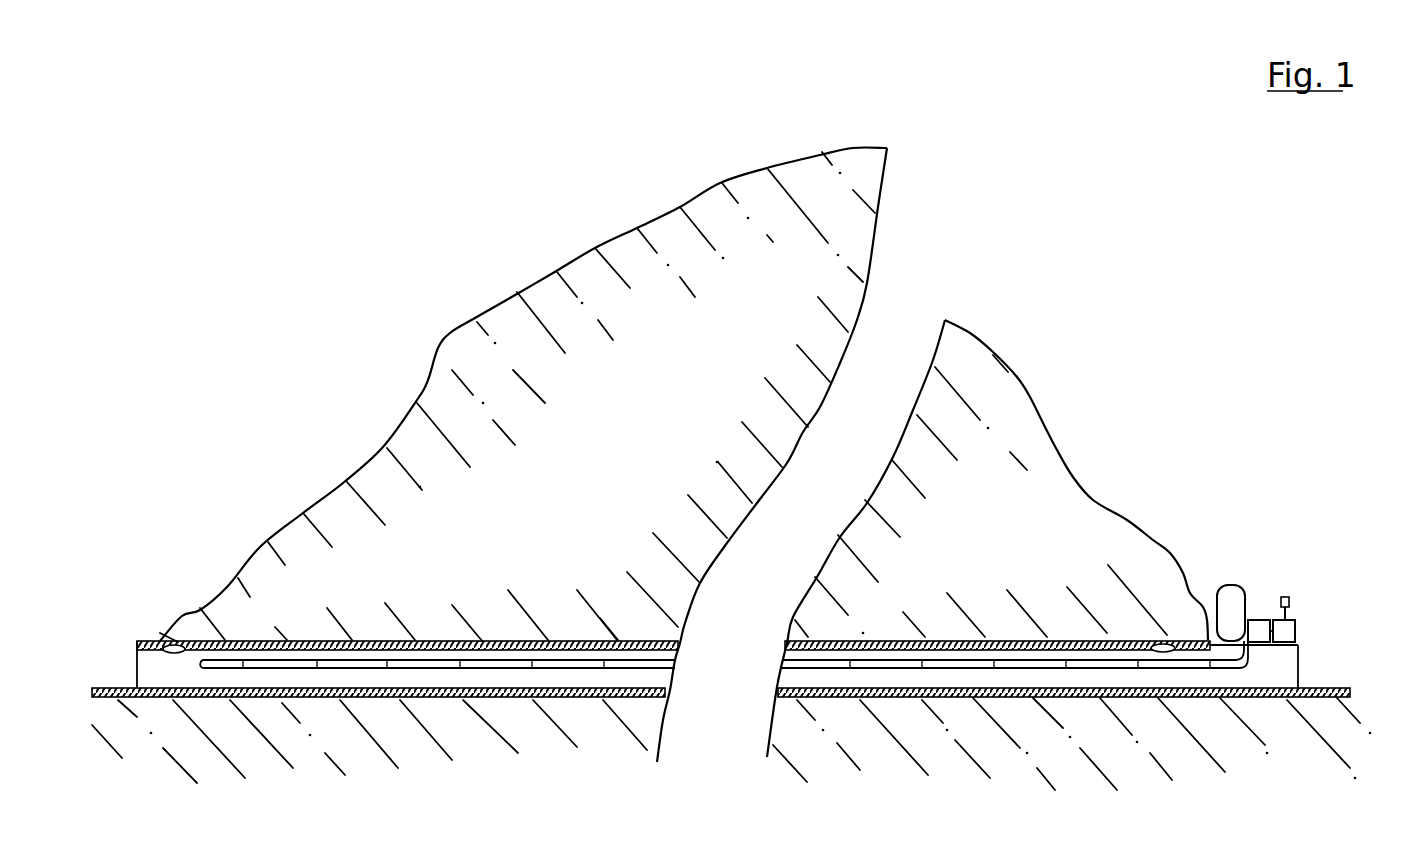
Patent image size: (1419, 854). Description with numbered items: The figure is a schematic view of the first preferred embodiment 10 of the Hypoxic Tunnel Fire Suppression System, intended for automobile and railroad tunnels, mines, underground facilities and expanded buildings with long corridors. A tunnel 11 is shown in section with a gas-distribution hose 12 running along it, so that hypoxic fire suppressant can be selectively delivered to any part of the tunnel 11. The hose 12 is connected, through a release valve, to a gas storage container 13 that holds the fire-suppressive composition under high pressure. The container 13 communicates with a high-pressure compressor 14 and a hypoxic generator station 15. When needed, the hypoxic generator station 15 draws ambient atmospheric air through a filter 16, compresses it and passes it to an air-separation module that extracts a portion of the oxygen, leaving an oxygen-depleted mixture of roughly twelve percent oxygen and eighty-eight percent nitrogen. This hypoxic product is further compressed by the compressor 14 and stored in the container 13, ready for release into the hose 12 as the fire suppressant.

The Hypoxic Tunnel Fire Suppression System 10 is at (288, 133).
The tunnel 11 is at (877, 641).
The gas-distribution hose 12 is at (360, 665).
The gas storage container 13 is at (1227, 603).
The high-pressure compressor 14 is at (1262, 620).
The hypoxic generator station 15 is at (1295, 628).
The filter 16 is at (1285, 600).